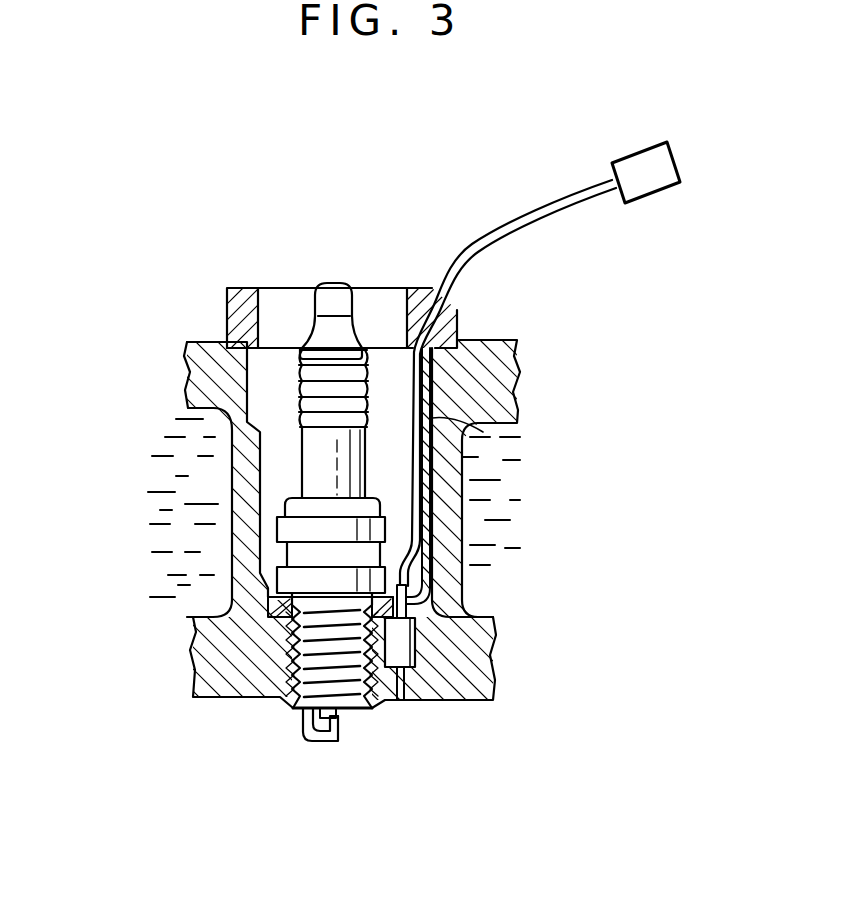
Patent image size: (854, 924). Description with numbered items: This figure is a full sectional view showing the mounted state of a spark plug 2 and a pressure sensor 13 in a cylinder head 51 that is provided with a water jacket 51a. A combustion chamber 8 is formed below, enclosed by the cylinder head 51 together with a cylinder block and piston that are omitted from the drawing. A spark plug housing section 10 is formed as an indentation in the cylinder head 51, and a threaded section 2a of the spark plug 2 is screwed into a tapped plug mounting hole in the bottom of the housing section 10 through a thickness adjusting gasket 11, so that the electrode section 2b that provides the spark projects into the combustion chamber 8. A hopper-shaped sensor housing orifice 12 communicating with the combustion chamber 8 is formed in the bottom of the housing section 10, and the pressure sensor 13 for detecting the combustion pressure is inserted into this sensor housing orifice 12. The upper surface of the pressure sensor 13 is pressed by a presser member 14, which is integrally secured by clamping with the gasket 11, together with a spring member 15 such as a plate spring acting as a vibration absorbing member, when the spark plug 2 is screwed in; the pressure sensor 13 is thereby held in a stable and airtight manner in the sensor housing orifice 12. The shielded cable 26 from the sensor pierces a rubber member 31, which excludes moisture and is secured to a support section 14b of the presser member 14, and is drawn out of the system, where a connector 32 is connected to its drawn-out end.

The spark plug 2 is at (333, 290).
The threaded section 2a is at (346, 690).
The electrode section 2b is at (323, 738).
The combustion chamber 8 is at (222, 714).
The spark plug housing section 10 is at (252, 382).
The thickness adjusting gasket 11 is at (262, 592).
The sensor housing orifice 12 is at (365, 690).
The pressure sensor 13 is at (418, 651).
The presser member 14 is at (268, 596).
The support section 14b is at (455, 430).
The spring member 15 is at (432, 608).
The shielded cable 26 is at (517, 220).
The rubber member 31 is at (430, 292).
The connector 32 is at (634, 160).
The cylinder head 51 is at (497, 372).
The water jacket 51a is at (188, 483).